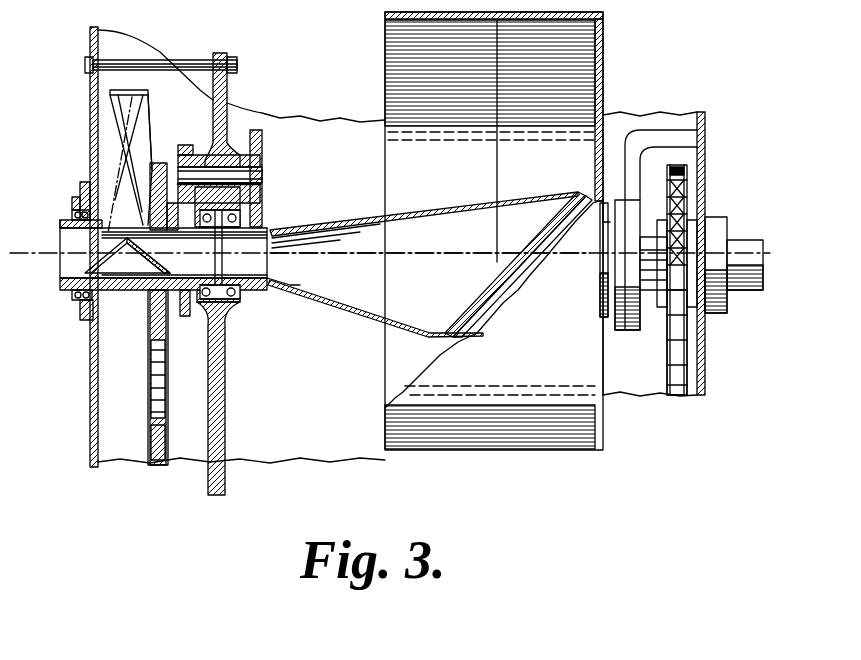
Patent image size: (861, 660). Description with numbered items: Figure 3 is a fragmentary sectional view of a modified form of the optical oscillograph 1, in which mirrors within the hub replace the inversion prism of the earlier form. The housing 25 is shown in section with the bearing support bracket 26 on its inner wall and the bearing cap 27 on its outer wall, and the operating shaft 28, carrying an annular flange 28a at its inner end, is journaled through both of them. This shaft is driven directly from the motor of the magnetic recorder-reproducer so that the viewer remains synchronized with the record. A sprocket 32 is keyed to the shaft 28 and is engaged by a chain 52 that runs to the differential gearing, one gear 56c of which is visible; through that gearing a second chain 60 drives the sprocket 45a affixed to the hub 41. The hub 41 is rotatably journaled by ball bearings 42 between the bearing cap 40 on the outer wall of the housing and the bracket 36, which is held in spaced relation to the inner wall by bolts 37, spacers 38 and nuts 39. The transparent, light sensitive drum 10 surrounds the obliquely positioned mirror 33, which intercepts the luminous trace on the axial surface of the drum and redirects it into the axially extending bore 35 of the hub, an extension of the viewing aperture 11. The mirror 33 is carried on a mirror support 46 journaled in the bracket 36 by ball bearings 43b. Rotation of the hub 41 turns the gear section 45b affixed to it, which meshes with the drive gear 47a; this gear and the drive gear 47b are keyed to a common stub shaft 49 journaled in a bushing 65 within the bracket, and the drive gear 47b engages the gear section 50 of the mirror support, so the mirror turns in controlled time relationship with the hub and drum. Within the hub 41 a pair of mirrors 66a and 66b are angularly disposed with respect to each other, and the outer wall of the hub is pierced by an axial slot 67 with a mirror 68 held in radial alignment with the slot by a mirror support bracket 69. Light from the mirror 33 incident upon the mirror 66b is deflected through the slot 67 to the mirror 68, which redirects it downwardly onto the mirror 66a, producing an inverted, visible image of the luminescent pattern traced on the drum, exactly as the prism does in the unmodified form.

The optical oscillograph 1 is at (333, 109).
The transparent drum 10 is at (598, 74).
The viewing aperture 11 is at (430, 264).
The housing 25 is at (706, 116).
The bearing support bracket 26 is at (645, 145).
The bearing cap 27 is at (718, 217).
The operating shaft 28 is at (745, 240).
The annular flange 28a is at (604, 320).
The sprocket 32 is at (690, 168).
The mirror 33 is at (530, 212).
The axially extending bore 35 is at (60, 238).
The bracket 36 is at (224, 53).
The bolts 37 is at (85, 64).
The spacers 38 is at (182, 60).
The nuts 39 is at (237, 67).
The bearing cap 40 is at (80, 188).
The hub 41 is at (136, 292).
The ball bearings 42 is at (72, 294).
The ball bearings 43b is at (238, 305).
The sprocket 45a is at (150, 337).
The gear section 45b is at (183, 316).
The mirror support 46 is at (356, 314).
The drive gear 47a is at (186, 145).
The drive gear 47b is at (262, 150).
The stub shaft 49 is at (262, 176).
The gear section 50 is at (262, 224).
The chain 52 is at (667, 376).
The gear 56c is at (160, 446).
The chain 60 is at (150, 392).
The bushing 65 is at (228, 150).
The mirror 66a is at (100, 266).
The mirror 66b is at (160, 262).
The axial slot 67 is at (103, 233).
The mirror 68 is at (138, 93).
The mirror support bracket 69 is at (152, 123).